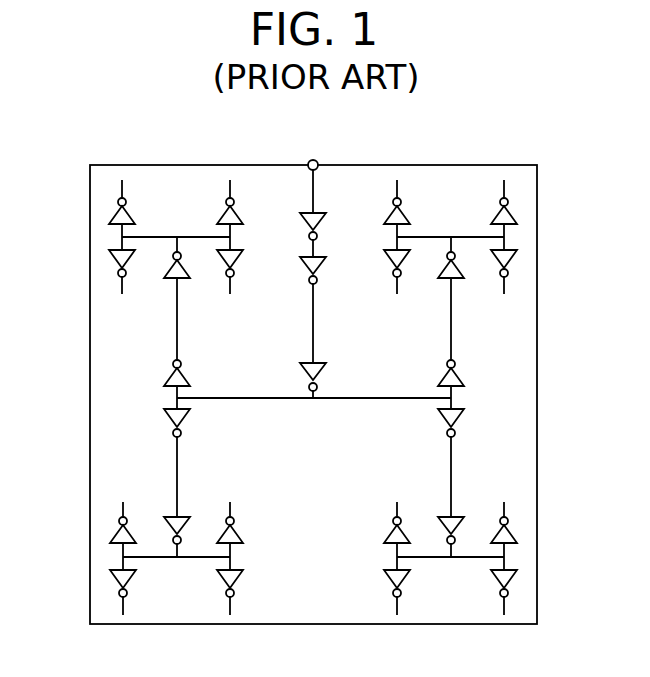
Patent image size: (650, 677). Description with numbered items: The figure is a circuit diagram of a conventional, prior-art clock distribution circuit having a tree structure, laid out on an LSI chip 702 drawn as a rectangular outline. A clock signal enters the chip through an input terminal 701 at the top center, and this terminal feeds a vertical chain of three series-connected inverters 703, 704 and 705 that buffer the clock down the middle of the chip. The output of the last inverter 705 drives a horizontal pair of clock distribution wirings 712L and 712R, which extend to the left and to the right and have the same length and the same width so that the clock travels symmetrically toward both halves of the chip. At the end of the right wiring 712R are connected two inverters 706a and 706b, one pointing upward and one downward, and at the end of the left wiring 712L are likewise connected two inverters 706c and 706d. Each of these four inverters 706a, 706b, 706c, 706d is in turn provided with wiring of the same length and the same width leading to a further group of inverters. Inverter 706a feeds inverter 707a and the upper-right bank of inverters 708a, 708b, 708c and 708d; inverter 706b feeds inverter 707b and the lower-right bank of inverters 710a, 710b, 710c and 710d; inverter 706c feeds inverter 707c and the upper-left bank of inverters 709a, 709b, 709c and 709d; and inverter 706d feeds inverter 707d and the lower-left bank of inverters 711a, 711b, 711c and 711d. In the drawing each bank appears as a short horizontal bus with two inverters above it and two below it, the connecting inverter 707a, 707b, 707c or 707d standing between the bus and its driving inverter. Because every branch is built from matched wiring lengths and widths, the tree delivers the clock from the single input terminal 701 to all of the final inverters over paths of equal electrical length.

The input terminal 701 is at (318, 160).
The LSI chip 702 is at (398, 164).
The inverter 703 is at (320, 222).
The inverter 704 is at (320, 264).
The inverter 705 is at (320, 368).
The inverter 706a is at (458, 378).
The inverter 706b is at (458, 415).
The inverter 706c is at (185, 376).
The inverter 706d is at (172, 425).
The inverter 707a is at (444, 272).
The inverter 707b is at (453, 524).
The inverter 707c is at (171, 272).
The inverter 707d is at (179, 524).
The inverter 708a is at (513, 218).
The inverter 708b is at (512, 258).
The inverter 708c is at (402, 218).
The inverter 708d is at (389, 262).
The inverter 709a is at (235, 217).
The inverter 709b is at (236, 259).
The inverter 709c is at (127, 217).
The inverter 709d is at (113, 258).
The inverter 710a is at (513, 537).
The inverter 710b is at (513, 576).
The inverter 710c is at (406, 536).
The inverter 710d is at (389, 578).
The inverter 711a is at (237, 537).
The inverter 711b is at (237, 578).
The inverter 711c is at (132, 536).
The inverter 711d is at (113, 579).
The clock distribution wiring 712L is at (219, 398).
The clock distribution wiring 712R is at (352, 398).